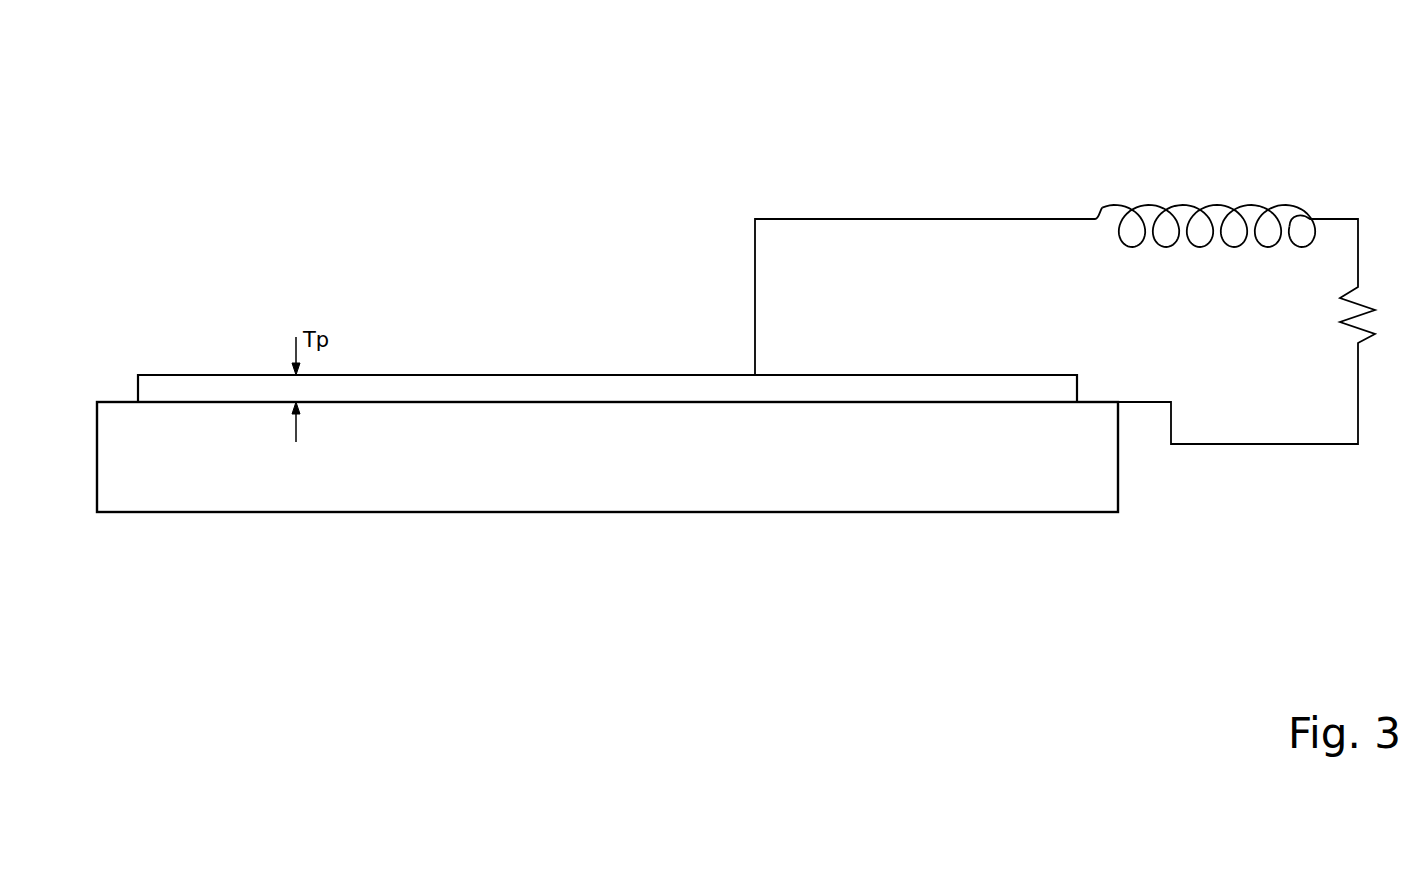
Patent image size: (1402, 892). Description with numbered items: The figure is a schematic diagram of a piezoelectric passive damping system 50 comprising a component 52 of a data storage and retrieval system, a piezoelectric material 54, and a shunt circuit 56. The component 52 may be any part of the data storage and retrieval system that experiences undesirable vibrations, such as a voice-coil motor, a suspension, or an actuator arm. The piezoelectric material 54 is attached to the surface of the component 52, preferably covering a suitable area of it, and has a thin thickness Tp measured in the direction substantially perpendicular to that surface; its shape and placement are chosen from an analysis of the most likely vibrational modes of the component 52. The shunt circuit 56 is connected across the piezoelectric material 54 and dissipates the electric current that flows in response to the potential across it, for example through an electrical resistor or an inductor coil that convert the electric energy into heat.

The piezoelectric passive damping system 50 is at (466, 141).
The component 52 is at (573, 492).
The piezoelectric material 54 is at (586, 380).
The shunt circuit 56 is at (966, 217).